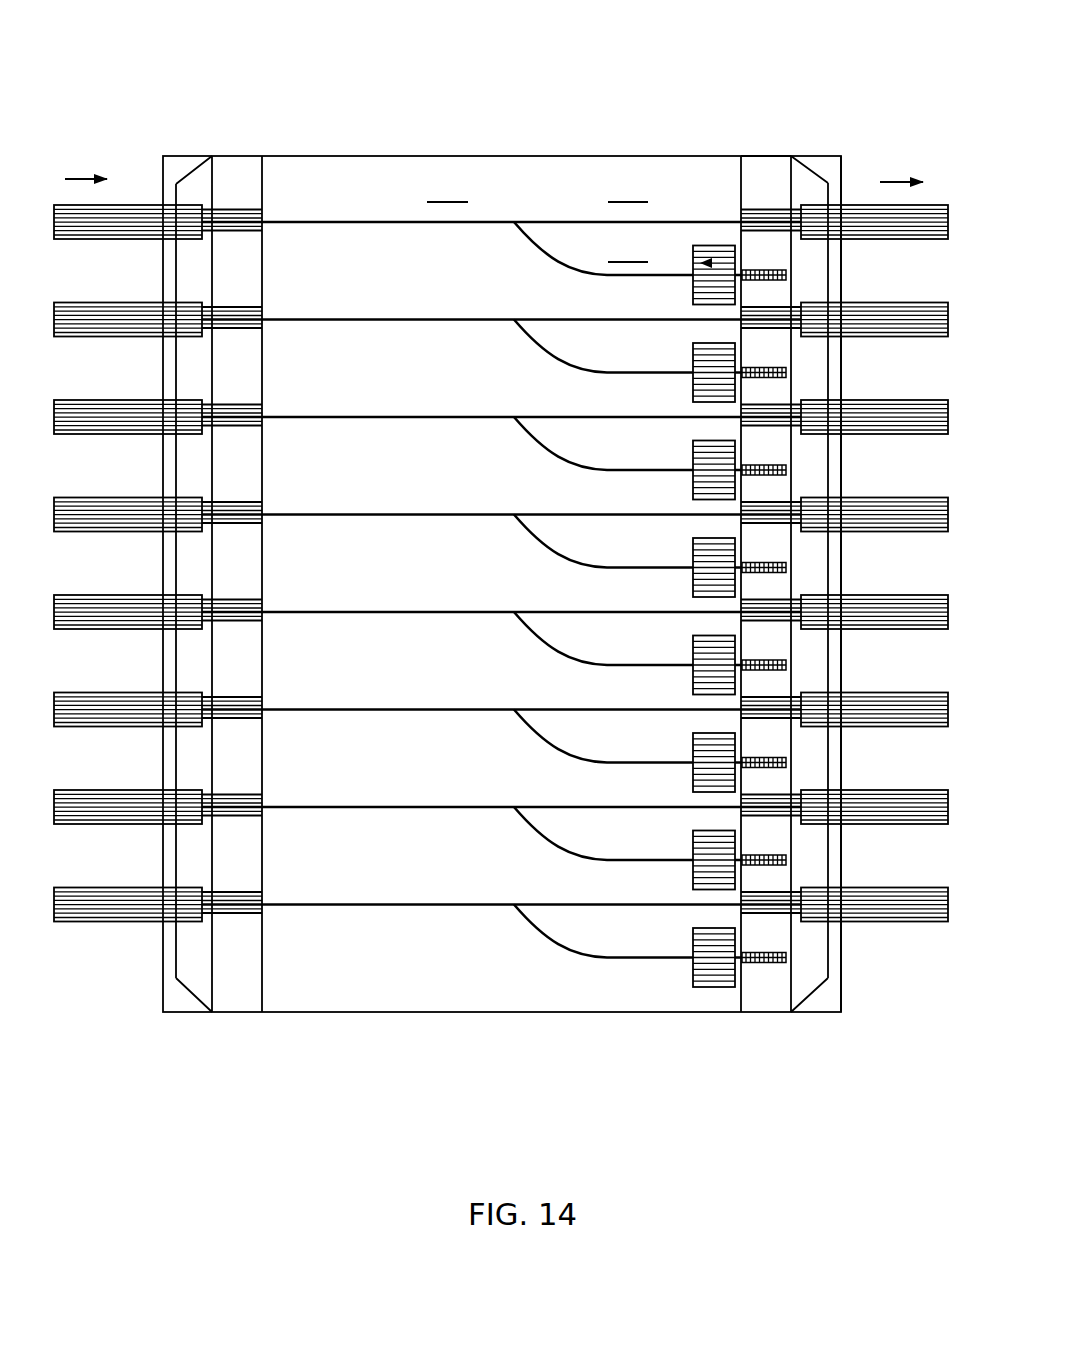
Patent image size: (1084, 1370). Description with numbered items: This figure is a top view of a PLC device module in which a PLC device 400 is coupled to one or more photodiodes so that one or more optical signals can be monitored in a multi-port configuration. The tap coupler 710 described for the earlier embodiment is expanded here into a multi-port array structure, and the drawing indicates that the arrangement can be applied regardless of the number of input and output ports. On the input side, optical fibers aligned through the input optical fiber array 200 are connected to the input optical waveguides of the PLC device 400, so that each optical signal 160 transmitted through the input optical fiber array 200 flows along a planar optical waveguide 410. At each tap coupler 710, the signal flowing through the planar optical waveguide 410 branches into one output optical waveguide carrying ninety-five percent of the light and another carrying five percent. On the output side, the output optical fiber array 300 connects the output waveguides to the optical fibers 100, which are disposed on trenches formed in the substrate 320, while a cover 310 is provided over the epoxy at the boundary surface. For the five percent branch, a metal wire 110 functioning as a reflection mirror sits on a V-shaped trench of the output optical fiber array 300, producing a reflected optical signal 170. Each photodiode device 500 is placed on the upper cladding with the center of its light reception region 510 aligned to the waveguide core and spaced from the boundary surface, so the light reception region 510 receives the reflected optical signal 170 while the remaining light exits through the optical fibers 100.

The optical fiber 100 is at (908, 918).
The metal wire 110 is at (783, 857).
The optical signal 160 is at (80, 178).
The reflected optical signal 170 is at (718, 258).
The input optical fiber array 200 is at (178, 1005).
The output optical fiber array 300 is at (787, 1008).
The cover 310 is at (765, 168).
The substrate 320 is at (832, 1005).
The PLC device 400 is at (465, 1012).
The planar optical waveguide 410 is at (342, 224).
The photodiode device 500 is at (692, 1033).
The light reception region 510 is at (718, 965).
The tap coupler 710 is at (517, 226).